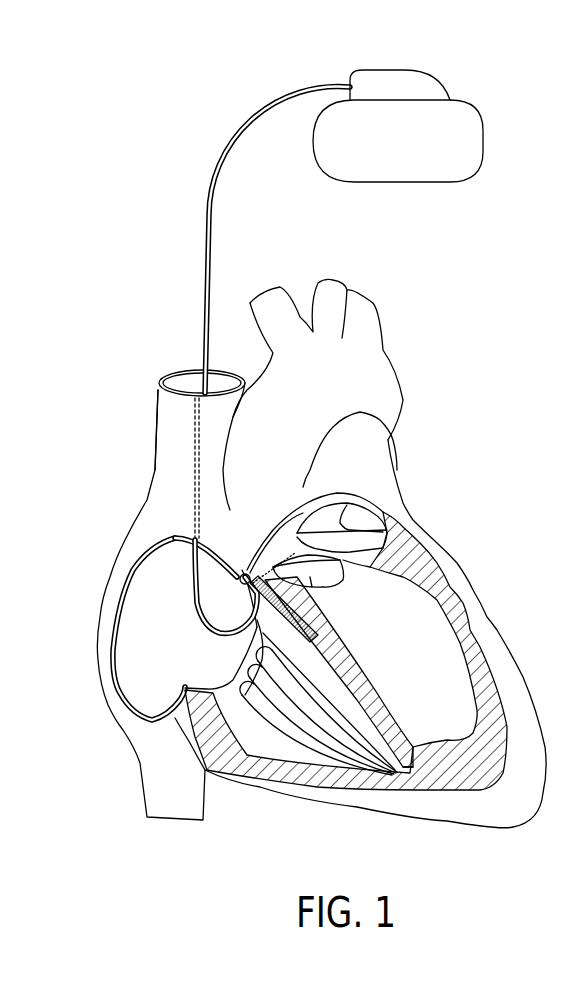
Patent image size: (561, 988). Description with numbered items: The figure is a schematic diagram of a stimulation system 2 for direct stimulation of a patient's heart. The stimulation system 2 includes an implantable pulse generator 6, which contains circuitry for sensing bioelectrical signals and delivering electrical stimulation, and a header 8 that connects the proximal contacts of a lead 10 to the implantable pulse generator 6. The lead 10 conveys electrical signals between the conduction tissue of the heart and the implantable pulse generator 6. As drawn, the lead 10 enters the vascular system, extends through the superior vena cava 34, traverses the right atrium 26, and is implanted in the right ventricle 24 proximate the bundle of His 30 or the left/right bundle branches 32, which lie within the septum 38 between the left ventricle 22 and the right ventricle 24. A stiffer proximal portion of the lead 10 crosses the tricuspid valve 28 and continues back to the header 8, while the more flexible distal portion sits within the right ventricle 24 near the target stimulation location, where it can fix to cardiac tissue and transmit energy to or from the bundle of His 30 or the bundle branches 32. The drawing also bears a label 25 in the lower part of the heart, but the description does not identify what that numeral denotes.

The stimulation system 2 is at (187, 97).
The implantable pulse generator 6 is at (423, 182).
The header 8 is at (416, 70).
The lead 10 is at (203, 210).
The left ventricle 22 is at (423, 652).
The right ventricle 24 is at (290, 743).
The apex 25 is at (413, 765).
The right atrium 26 is at (157, 622).
The tricuspid valve 28 is at (230, 688).
The bundle of His 30 is at (242, 568).
The left/right bundle branches 32 is at (316, 633).
The superior vena cava 34 is at (158, 418).
The septum 38 is at (360, 681).